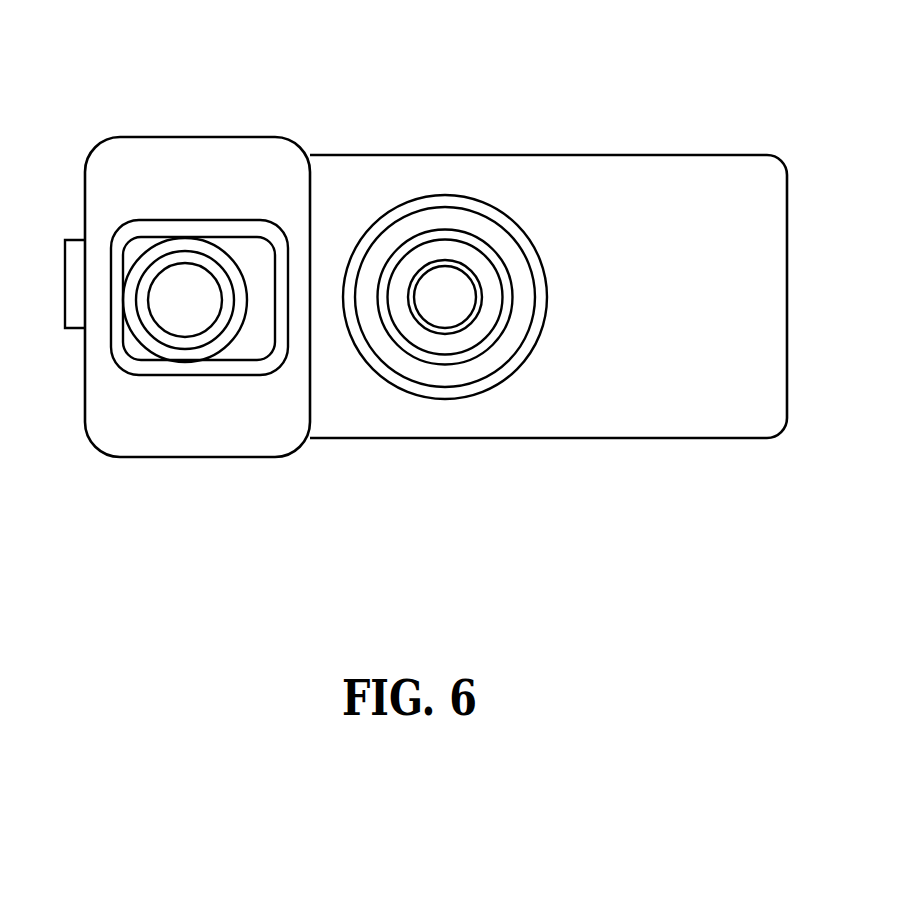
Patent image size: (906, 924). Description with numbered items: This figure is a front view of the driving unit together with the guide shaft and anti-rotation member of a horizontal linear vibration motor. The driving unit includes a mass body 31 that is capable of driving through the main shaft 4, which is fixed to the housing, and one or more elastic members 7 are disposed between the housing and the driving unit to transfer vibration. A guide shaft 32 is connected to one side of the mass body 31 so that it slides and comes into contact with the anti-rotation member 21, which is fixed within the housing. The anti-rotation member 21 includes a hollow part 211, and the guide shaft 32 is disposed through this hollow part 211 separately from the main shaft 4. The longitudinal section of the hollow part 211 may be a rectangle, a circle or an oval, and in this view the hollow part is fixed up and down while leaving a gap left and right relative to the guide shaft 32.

The anti-rotation member 21 is at (177, 162).
The hollow part 211 is at (253, 363).
The mass body 31 is at (650, 197).
The guide shaft 32 is at (187, 303).
The main shaft 4 is at (450, 295).
The elastic member 7 is at (515, 322).